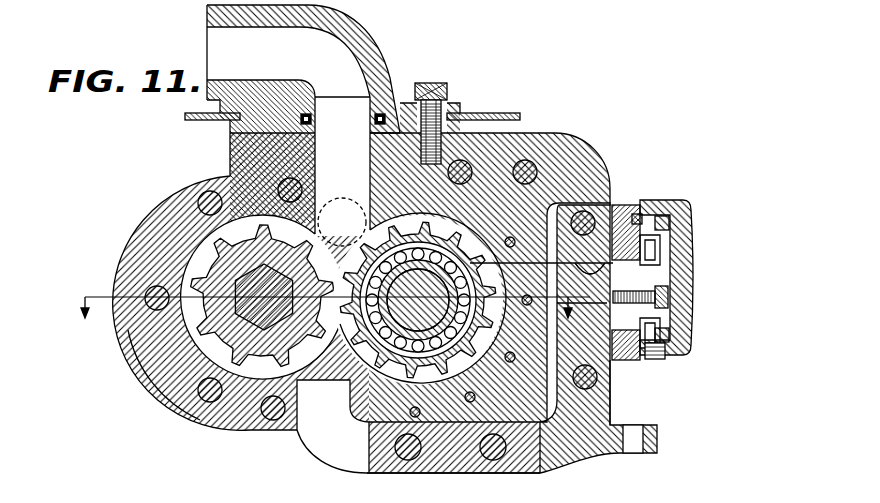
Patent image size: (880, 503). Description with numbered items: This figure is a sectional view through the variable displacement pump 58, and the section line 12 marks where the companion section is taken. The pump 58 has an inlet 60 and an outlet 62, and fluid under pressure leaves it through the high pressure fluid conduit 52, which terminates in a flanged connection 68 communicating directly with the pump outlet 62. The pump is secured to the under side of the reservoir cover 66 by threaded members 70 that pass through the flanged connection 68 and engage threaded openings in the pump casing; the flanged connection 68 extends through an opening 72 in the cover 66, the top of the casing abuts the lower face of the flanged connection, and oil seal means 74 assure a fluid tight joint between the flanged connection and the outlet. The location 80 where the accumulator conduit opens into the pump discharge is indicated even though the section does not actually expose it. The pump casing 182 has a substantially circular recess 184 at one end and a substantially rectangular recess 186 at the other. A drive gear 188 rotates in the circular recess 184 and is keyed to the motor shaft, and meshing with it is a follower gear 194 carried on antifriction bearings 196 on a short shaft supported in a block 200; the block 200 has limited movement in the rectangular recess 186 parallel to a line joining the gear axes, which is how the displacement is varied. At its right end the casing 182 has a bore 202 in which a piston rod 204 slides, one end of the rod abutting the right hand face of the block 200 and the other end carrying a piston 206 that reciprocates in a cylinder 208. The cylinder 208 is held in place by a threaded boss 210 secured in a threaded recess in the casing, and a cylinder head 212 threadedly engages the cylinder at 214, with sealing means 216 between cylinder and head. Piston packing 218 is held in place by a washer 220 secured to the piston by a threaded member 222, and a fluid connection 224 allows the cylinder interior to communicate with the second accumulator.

The section line 12- 12 is at (330, 319).
The high pressure fluid conduit 52 is at (225, 65).
The variable displacement pump 58 is at (171, 209).
The inlet 60 is at (318, 433).
The outlet 62 is at (333, 147).
The cover 66 is at (511, 113).
The flanged connection 68 is at (404, 115).
The threaded members 70 is at (432, 92).
The opening 72 is at (240, 119).
The oil seal means 74 is at (312, 122).
The opening 80 is at (343, 210).
The pump casing 182 is at (173, 383).
The substantially circular recess 184 is at (243, 413).
The substantially rectangular recess 186 is at (541, 472).
The gear 188 is at (167, 350).
The follower gear 194 is at (337, 353).
The antifriction bearings 196 is at (380, 363).
The block 200 is at (342, 222).
The bore 202 is at (607, 262).
The piston rod 204 is at (607, 367).
The piston 206 is at (660, 252).
The cylinder 208 is at (684, 215).
The threaded boss 210 is at (613, 357).
The cylinder head 212 is at (690, 291).
The threaded engagement 214 is at (613, 250).
The sealing means 216 is at (641, 214).
The piston packing 218 is at (655, 328).
The washer 220 is at (660, 309).
The threaded member 222 is at (664, 276).
The fluid connection 224 is at (657, 360).